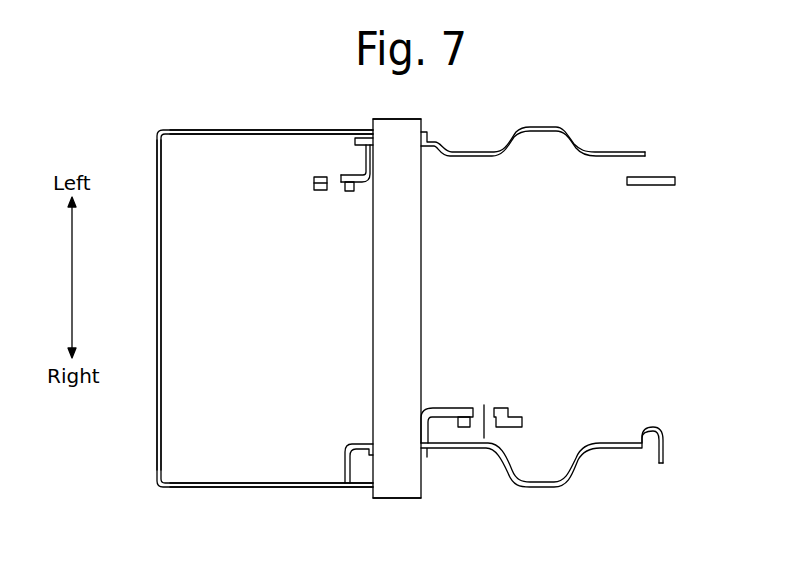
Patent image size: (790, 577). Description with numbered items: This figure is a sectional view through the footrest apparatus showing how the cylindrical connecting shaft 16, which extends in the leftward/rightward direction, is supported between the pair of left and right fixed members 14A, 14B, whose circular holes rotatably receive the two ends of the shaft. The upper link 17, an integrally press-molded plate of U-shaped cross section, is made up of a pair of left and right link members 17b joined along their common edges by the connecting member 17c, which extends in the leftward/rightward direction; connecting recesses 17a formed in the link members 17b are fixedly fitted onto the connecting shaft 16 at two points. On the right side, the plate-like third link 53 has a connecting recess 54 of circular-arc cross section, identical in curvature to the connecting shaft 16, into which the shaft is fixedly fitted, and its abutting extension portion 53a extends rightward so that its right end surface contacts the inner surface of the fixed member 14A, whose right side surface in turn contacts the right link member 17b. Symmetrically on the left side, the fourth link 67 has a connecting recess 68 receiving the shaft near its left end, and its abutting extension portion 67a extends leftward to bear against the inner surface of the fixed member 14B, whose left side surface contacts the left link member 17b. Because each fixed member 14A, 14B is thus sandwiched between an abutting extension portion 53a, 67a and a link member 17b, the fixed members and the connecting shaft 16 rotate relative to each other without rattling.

The fixed member 14A is at (615, 443).
The fixed member 14B is at (600, 153).
The connecting shaft 16 is at (408, 290).
The upper link 17 is at (162, 375).
The connecting recess 17a is at (378, 128).
The link member 17b is at (242, 129).
The connecting member 17c is at (162, 276).
The third link 53 is at (452, 408).
The abutting extension portion 53a is at (447, 449).
The connecting recess 54 is at (446, 441).
The fourth link 67 is at (337, 186).
The abutting extension portion 67a is at (367, 153).
The connecting recess 68 is at (374, 162).